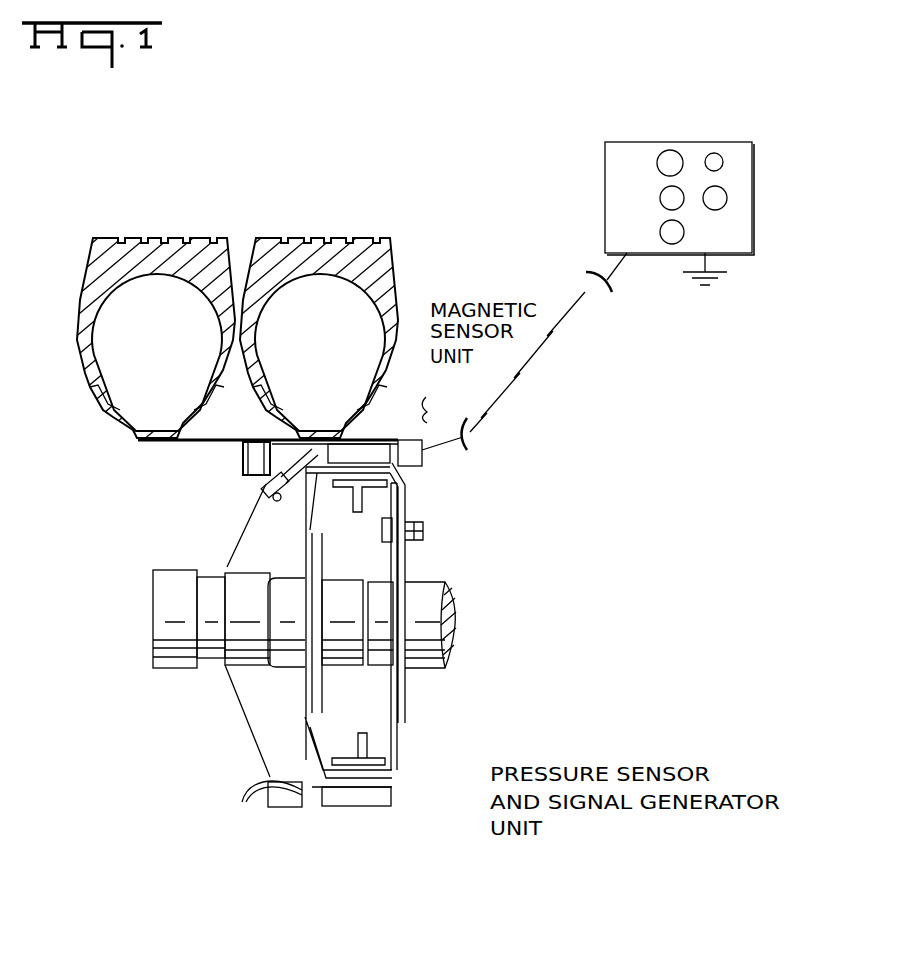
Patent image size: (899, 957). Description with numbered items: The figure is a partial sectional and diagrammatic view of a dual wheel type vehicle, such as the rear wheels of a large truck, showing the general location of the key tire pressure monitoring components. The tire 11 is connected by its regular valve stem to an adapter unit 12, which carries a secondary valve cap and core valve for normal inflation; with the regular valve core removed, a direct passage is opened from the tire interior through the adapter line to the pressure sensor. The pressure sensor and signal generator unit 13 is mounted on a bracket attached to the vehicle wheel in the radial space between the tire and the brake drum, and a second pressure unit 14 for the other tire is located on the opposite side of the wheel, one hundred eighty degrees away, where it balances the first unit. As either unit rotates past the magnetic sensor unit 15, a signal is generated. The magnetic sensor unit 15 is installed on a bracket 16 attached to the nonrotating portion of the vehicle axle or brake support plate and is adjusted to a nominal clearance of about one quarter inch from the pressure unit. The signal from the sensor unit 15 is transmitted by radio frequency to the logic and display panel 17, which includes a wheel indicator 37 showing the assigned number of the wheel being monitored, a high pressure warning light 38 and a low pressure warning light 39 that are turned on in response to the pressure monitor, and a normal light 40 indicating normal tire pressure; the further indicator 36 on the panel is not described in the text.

The tire 11 is at (337, 238).
The adapter unit 12 is at (263, 488).
The pressure sensor and signal generator unit 13 is at (362, 444).
The second pressure unit 14 is at (395, 795).
The magnetic sensor unit 15 is at (472, 348).
The bracket 16 is at (406, 494).
The logic and display panel 17 is at (752, 163).
The indicator lamp 36 is at (717, 153).
The wheel indicator 37 is at (723, 203).
The high pressure warning light 38 is at (668, 160).
The low pressure warning light 39 is at (660, 237).
The normal light 40 is at (660, 198).